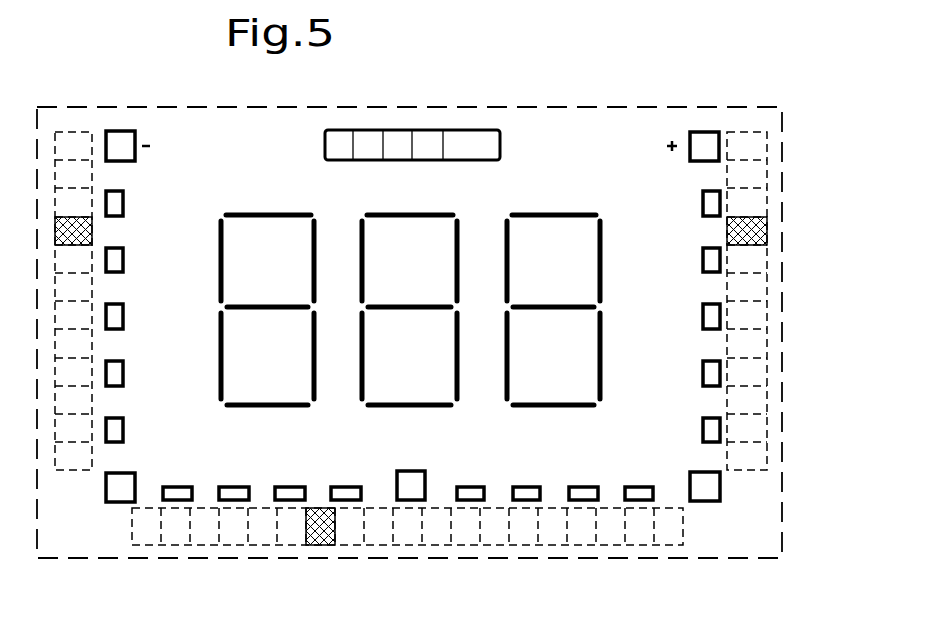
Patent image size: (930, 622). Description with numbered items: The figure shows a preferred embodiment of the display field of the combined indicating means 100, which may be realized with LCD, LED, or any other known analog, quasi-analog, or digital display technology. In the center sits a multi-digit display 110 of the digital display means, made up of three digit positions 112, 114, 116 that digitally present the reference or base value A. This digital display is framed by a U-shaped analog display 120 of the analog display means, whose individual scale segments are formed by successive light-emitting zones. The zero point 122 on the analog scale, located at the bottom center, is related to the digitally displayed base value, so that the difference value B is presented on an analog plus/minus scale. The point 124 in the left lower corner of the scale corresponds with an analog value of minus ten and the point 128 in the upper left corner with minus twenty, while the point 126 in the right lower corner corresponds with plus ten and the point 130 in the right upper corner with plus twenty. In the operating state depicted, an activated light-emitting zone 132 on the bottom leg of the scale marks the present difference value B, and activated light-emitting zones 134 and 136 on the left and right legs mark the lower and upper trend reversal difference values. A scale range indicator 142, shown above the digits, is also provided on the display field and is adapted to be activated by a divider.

The combined indicating means 100 is at (603, 106).
The multi-digit display 110 is at (410, 273).
The digit position 112 is at (270, 212).
The digit position 114 is at (405, 212).
The digit position 116 is at (552, 212).
The analog display 120 is at (553, 507).
The zero point 122 is at (427, 479).
The point 124 is at (114, 504).
The point 126 is at (722, 485).
The point 128 is at (125, 130).
The point 130 is at (700, 131).
The activated light-emitting zone 132 is at (318, 548).
The activated light-emitting zone 134 is at (92, 229).
The activated light-emitting zone 136 is at (727, 232).
The scale range indicator 142 is at (405, 129).